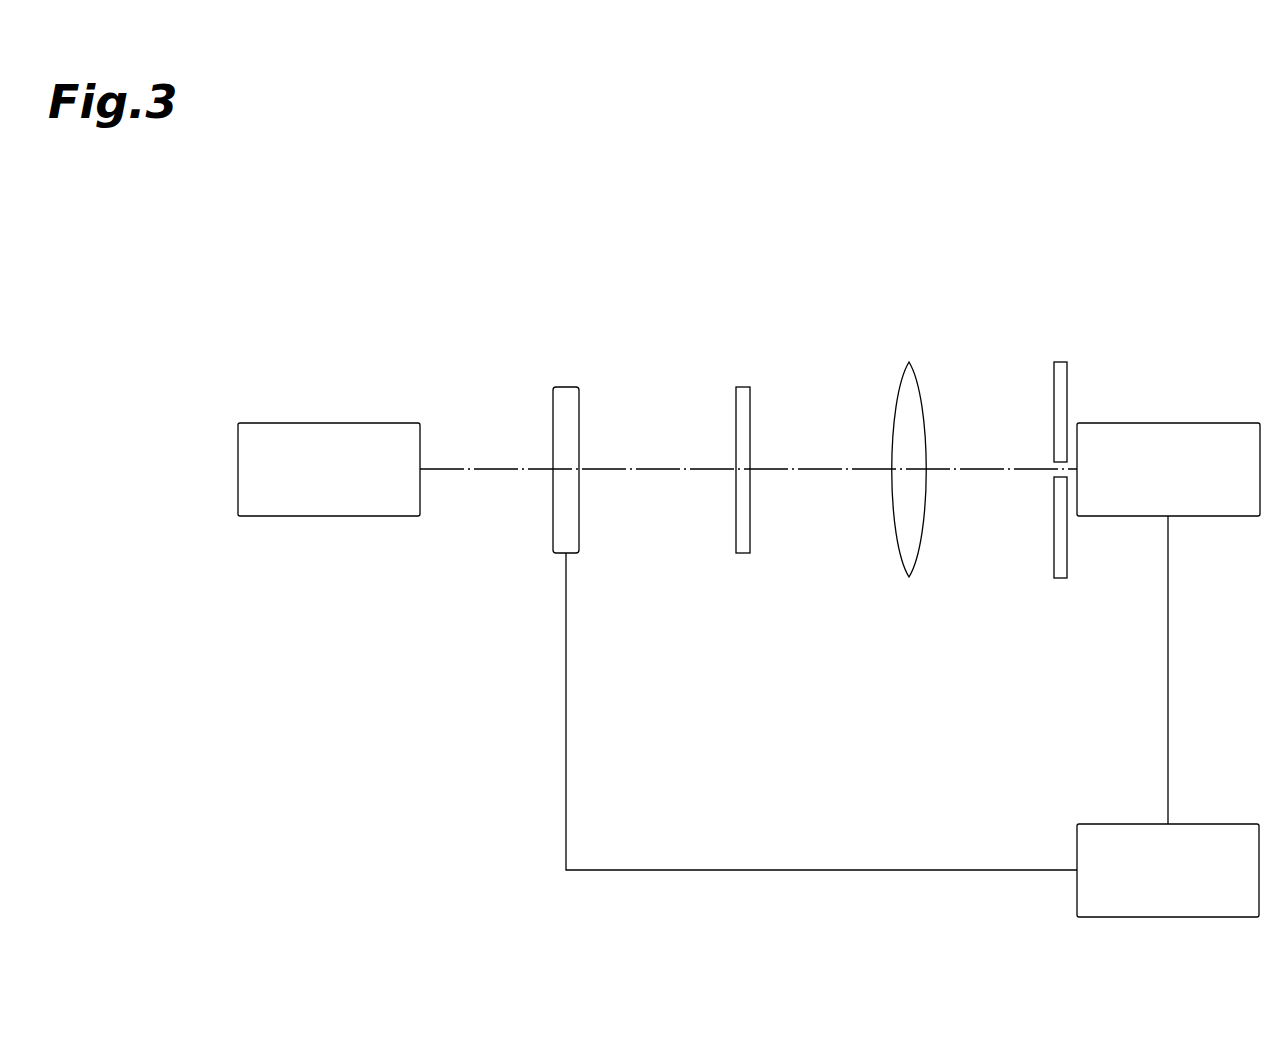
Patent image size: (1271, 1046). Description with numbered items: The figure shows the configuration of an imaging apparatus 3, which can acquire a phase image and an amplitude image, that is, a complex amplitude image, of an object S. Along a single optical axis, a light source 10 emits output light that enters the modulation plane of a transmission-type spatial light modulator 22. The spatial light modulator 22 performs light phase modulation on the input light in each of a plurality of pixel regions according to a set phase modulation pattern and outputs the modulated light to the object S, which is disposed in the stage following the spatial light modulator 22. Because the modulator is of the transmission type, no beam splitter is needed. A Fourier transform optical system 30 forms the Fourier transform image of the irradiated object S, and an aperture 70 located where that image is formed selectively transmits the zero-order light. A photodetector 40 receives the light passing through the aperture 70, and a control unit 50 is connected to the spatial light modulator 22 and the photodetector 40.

The imaging apparatus 3 is at (822, 250).
The light source 10 is at (332, 423).
The spatial light modulator 22 is at (566, 387).
The object S is at (742, 387).
The Fourier transform optical system 30 is at (909, 362).
The aperture 70 is at (1060, 362).
The photodetector 40 is at (1172, 423).
The control unit 50 is at (1226, 824).